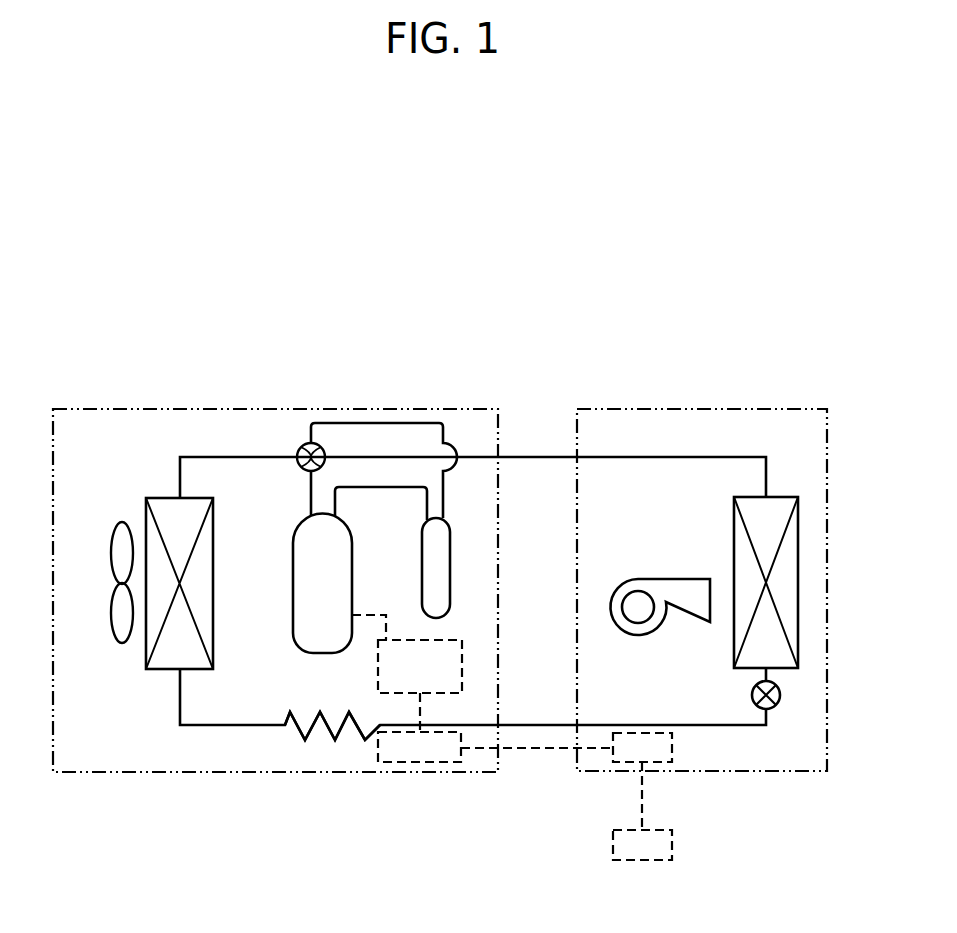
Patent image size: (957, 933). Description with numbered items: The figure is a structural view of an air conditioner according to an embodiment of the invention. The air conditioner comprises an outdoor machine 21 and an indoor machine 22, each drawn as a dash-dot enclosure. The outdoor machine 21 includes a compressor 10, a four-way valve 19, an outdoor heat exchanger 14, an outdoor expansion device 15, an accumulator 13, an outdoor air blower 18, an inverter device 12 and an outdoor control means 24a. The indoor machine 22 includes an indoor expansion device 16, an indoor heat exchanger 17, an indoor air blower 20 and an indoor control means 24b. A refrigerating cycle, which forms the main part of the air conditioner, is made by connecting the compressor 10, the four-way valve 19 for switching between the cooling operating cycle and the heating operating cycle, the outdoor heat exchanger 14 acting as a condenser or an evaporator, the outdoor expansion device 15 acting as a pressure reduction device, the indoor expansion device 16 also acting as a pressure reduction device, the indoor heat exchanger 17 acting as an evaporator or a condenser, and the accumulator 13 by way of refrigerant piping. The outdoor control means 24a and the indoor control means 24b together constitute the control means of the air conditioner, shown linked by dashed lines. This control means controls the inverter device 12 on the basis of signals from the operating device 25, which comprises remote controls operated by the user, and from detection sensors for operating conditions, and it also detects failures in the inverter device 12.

The compressor 10 is at (347, 525).
The inverter device 12 is at (393, 695).
The accumulator 13 is at (448, 523).
The outdoor heat exchanger 14 is at (157, 497).
The outdoor expansion device 15 is at (313, 735).
The indoor expansion device 16 is at (772, 710).
The indoor heat exchanger 17 is at (750, 497).
The outdoor air blower 18 is at (122, 522).
The four-way valve 19 is at (300, 447).
The indoor air blower 20 is at (627, 580).
The outdoor machine 21 is at (143, 408).
The indoor machine 22 is at (772, 408).
The outdoor control means 24a is at (430, 763).
The indoor control means 24b is at (663, 763).
The operating device 25 is at (653, 862).